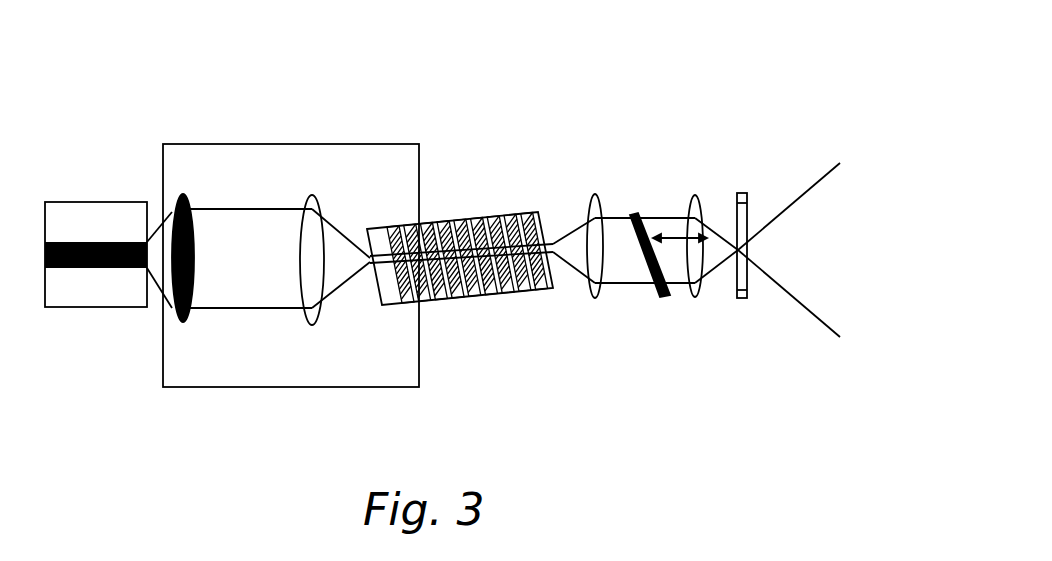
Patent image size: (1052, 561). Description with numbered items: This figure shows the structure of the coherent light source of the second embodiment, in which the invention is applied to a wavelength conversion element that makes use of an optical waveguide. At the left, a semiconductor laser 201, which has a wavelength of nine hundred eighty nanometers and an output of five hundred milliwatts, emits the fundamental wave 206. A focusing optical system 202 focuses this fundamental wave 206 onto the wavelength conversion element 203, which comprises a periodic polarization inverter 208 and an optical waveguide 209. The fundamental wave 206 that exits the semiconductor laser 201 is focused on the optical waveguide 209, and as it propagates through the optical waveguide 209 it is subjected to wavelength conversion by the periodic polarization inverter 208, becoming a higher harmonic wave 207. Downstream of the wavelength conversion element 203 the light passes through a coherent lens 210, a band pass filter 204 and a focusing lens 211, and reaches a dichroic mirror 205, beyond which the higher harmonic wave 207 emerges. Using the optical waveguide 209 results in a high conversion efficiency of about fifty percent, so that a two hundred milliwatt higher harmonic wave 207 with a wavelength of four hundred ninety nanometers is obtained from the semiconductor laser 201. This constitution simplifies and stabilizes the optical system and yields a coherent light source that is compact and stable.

The semiconductor laser 201 is at (87, 210).
The focusing optical system 202 is at (317, 144).
The wavelength conversion element 203 is at (465, 277).
The band pass filter 204 is at (661, 297).
The dichroic mirror 205 is at (747, 202).
The fundamental wave 206 is at (695, 258).
The higher harmonic wave 207 is at (792, 250).
The periodic polarization inverter 208 is at (412, 302).
The optical waveguide 209 is at (477, 297).
The coherent lens 210 is at (596, 192).
The focusing lens 211 is at (703, 196).